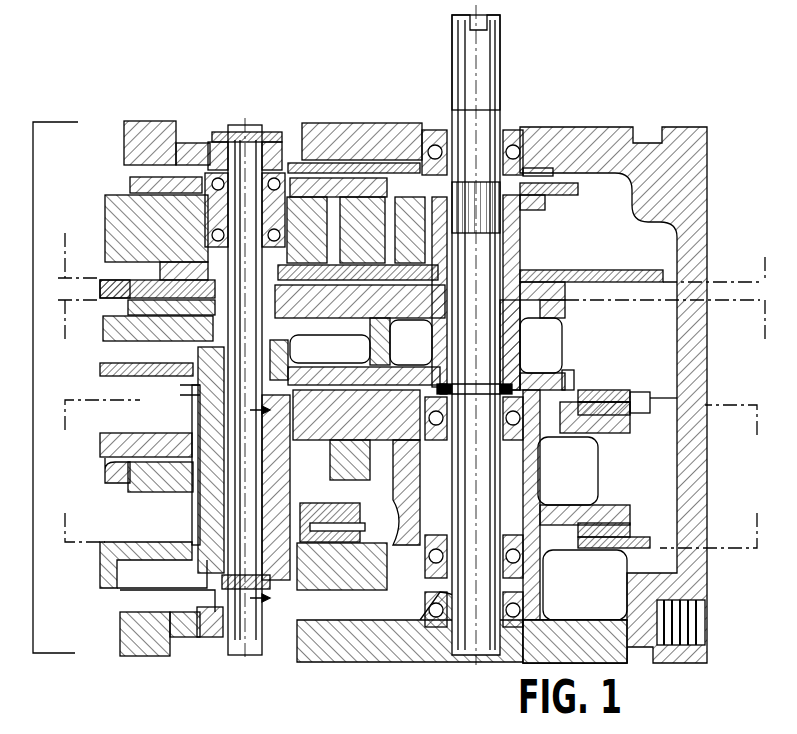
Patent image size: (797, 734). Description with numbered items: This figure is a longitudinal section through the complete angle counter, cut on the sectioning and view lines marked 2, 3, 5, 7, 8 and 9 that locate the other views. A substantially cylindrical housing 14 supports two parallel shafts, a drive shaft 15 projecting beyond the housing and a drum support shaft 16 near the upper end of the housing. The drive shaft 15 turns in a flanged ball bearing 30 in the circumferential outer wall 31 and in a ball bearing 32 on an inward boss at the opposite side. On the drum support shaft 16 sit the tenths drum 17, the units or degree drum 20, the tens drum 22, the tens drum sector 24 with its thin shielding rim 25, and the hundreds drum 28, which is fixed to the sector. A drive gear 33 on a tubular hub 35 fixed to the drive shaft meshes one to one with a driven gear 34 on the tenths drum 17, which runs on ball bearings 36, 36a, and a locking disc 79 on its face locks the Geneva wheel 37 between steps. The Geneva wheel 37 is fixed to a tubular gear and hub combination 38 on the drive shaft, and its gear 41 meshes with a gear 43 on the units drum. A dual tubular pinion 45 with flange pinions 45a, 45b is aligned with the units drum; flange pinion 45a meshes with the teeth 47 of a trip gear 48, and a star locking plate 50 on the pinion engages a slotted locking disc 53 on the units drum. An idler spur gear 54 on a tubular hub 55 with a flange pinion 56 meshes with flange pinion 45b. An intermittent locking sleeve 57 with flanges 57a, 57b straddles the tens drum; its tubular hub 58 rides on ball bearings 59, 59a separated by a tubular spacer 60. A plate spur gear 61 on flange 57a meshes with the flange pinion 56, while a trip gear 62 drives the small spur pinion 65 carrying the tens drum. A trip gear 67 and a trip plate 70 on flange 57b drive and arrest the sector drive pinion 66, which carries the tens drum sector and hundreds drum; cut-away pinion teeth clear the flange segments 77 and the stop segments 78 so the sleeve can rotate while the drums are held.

The section line 2- 2 is at (46, 388).
The section line 3- 3 is at (413, 244).
The section line 5- 5 is at (413, 329).
The section line 7- 7 is at (408, 410).
The section line 8- 8 is at (408, 527).
The view direction arrow 9 is at (277, 506).
The housing 14 is at (720, 210).
The drive shaft 15 is at (498, 74).
The drum support shaft 16 is at (243, 652).
The tenths drum 17 is at (105, 217).
The units or degree drum 20 is at (108, 332).
The tens drum 22 is at (105, 472).
The tens drum sector 24 is at (133, 487).
The rim 25 is at (420, 464).
The hundreds drum 28 is at (105, 577).
The flanged ball bearing 30 is at (535, 174).
The circumferential outer wall 31 is at (368, 132).
The ball bearing 32 is at (525, 620).
The drive gear 33 is at (560, 198).
The driven gear 34 is at (135, 182).
The tubular hub 35 is at (510, 220).
The ball bearing 36 is at (280, 247).
The ball bearing 36a is at (210, 207).
The Geneva wheel 37 is at (545, 274).
The tubular gear and hub combination 38 is at (440, 242).
The gear 41 is at (565, 307).
The gear 43 is at (115, 285).
The dual tubular pinion 45 is at (512, 367).
The flange pinion 45a is at (550, 337).
The flange pinion 45b is at (550, 374).
The teeth 47 is at (128, 312).
The trip gear 48 is at (378, 347).
The star locking plate 50 is at (530, 302).
The locking disc 53 is at (100, 290).
The idler spur gear 54 is at (132, 370).
The tubular hub 55 is at (290, 357).
The flange pinion 56 is at (180, 387).
The intermittent locking sleeve 57 is at (540, 472).
The flange 57a is at (615, 377).
The flange 57b is at (603, 541).
The tubular hub 58 is at (538, 494).
The ball bearing 59 is at (524, 412).
The ball bearing 59a is at (525, 537).
The tubular spacer 60 is at (425, 520).
The plate spur gear 61 is at (630, 394).
The trip gear 62 is at (642, 415).
The small spur pinion 65 is at (190, 414).
The sector drive pinion 66 is at (198, 517).
The trip gear 67 is at (632, 539).
The trip plate 70 is at (640, 580).
The circular segments 77 is at (605, 527).
The stop segments 78 is at (605, 434).
The locking disc 79 is at (168, 280).